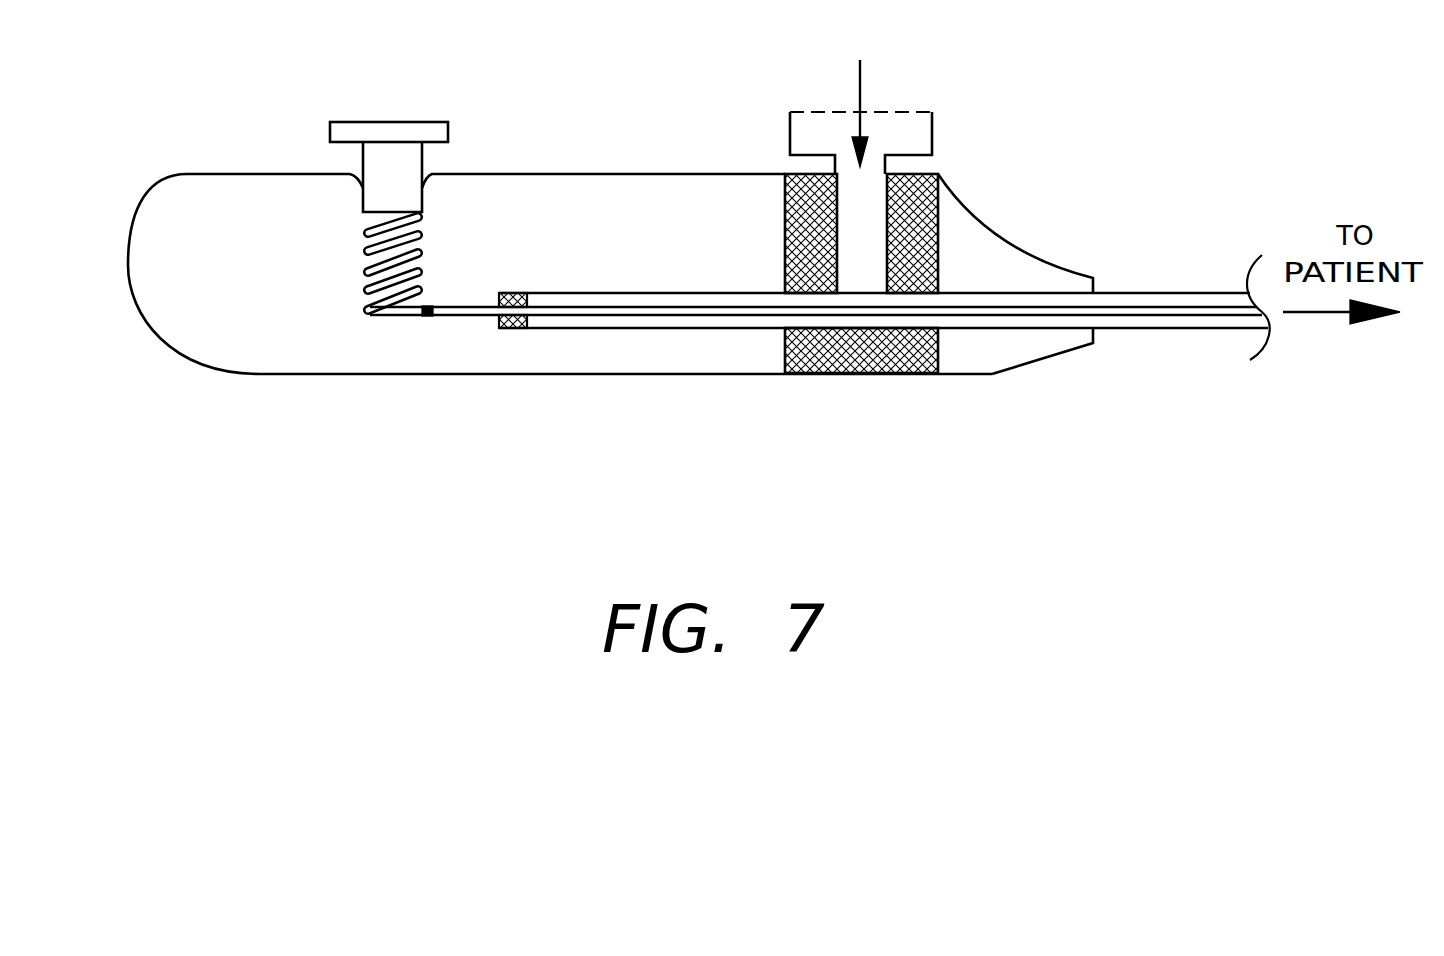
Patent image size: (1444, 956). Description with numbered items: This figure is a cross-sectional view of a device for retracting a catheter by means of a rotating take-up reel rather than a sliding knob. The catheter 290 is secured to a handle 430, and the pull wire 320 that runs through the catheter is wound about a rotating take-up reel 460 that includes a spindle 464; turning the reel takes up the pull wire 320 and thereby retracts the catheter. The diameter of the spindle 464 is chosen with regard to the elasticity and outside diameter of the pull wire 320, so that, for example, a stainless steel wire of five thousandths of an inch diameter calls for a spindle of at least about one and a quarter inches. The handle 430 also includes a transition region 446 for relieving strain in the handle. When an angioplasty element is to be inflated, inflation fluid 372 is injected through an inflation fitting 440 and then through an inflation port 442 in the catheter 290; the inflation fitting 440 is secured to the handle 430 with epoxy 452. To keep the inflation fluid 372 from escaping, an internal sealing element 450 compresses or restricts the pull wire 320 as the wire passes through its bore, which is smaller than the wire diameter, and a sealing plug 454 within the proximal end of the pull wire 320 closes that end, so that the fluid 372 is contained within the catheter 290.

The catheter 290 is at (1189, 330).
The pull wire 320 is at (475, 312).
The inflation fluid 372 is at (857, 102).
The handle 430 is at (365, 375).
The inflation fitting 440 is at (932, 128).
The inflation port 442 is at (783, 173).
The transition region 446 is at (1018, 345).
The internal sealing element 450 is at (512, 330).
The epoxy 452 is at (938, 190).
The sealing plug 454 is at (432, 314).
The rotating take-up reel 460 is at (425, 122).
The spindle 464 is at (383, 165).